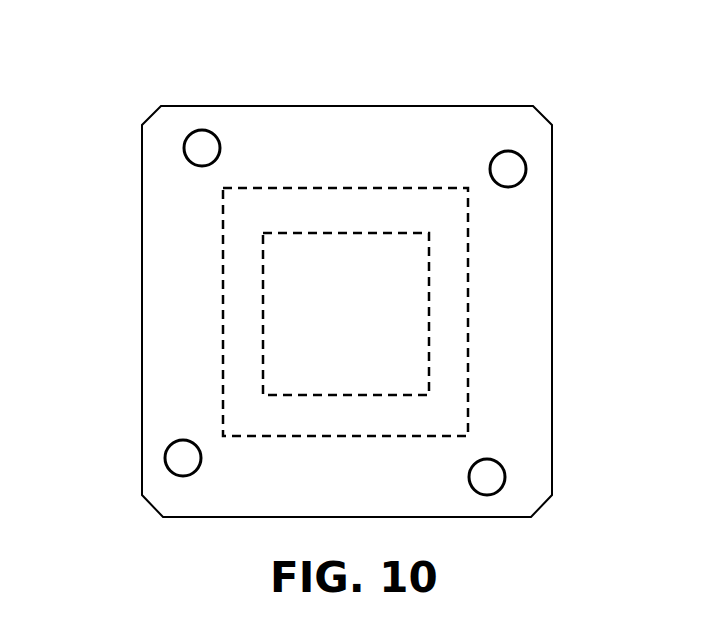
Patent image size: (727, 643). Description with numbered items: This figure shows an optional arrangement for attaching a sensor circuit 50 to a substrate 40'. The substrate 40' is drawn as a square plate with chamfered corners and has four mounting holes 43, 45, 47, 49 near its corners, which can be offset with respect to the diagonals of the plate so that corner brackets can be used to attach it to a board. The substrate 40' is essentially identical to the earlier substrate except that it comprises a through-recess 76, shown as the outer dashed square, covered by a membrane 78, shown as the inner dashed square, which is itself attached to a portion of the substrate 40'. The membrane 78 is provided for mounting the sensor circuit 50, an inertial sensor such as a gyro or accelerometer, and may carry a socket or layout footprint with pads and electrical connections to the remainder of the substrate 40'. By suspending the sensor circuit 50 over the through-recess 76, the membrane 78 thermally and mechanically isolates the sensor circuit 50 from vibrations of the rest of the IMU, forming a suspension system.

The substrate 40' is at (347, 277).
The mounting hole 43 is at (208, 130).
The mounting hole 45 is at (527, 169).
The mounting hole 47 is at (505, 477).
The mounting hole 49 is at (163, 453).
The sensor circuit 50 is at (412, 352).
The through-recess 76 is at (222, 236).
The membrane 78 is at (245, 287).